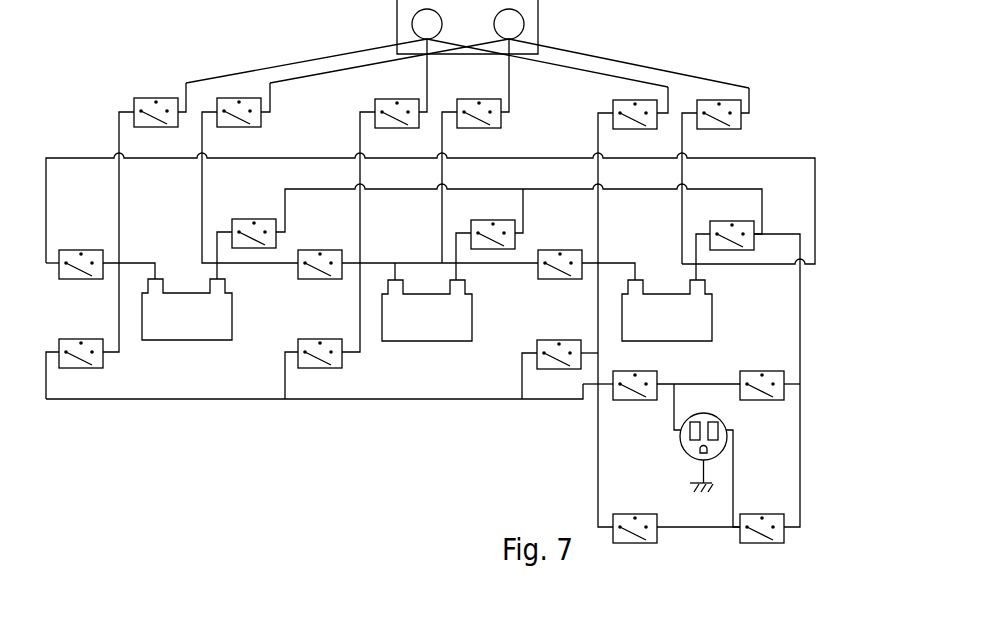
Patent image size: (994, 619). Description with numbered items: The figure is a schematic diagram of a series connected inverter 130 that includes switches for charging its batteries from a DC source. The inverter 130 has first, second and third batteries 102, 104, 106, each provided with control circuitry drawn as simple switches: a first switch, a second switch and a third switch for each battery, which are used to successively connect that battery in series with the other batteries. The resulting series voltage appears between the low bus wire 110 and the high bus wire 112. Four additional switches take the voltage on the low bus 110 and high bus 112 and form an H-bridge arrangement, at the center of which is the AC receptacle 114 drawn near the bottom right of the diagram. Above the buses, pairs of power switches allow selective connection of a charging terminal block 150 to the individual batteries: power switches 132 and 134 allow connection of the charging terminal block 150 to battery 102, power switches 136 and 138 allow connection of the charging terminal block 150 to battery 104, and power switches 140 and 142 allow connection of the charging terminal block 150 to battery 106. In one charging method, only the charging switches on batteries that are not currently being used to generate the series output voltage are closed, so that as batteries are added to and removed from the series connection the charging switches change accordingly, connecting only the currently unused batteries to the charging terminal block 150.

The first battery 102 is at (175, 340).
The second battery 104 is at (405, 341).
The third battery 106 is at (672, 341).
The low bus wire 110 is at (480, 400).
The high bus wire 112 is at (617, 192).
The 120V AC receptacle 114 is at (683, 452).
The series connected inverter 130 is at (353, 450).
The power switch 132 is at (157, 98).
The power switch 134 is at (258, 128).
The power switch 136 is at (385, 98).
The power switch 138 is at (497, 130).
The power switch 140 is at (620, 99).
The power switch 142 is at (737, 130).
The charging terminal block 150 is at (397, 14).